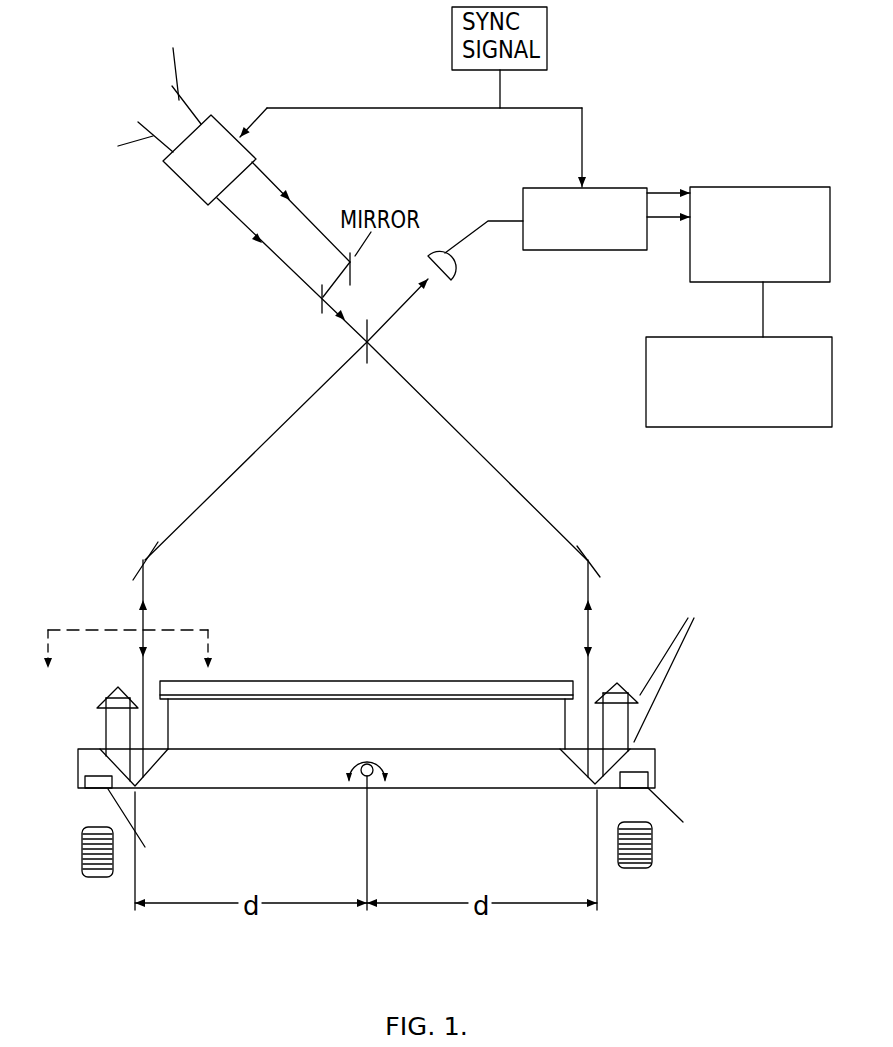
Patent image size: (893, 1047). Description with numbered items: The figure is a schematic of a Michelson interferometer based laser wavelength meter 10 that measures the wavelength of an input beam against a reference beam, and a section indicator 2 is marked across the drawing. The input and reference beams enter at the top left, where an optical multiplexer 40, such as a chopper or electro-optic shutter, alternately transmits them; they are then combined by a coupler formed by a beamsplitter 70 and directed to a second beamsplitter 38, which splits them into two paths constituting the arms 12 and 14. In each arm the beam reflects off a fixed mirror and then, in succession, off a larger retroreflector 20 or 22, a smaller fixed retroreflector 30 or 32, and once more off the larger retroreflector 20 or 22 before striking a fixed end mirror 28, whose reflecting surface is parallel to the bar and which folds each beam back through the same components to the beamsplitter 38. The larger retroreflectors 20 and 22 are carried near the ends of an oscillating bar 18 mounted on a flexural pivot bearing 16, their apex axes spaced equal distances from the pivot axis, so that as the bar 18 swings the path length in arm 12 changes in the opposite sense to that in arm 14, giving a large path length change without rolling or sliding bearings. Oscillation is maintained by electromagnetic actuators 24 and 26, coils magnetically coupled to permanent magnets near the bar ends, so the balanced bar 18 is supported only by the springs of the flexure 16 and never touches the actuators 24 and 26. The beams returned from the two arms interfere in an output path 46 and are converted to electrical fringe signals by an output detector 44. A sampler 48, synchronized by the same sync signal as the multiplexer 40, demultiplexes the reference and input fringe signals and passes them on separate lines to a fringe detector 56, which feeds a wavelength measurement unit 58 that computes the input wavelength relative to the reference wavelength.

The laser wavelength meter 10 is at (379, 566).
The arm 12 is at (485, 455).
The arm 14 is at (282, 426).
The flexural pivot bearing 16 is at (373, 776).
The oscillating bar 18 is at (205, 751).
The retroreflector 20 is at (656, 762).
The retroreflector 22 is at (100, 766).
The electromagnetic actuator 24 is at (635, 869).
The electromagnetic actuator 26 is at (100, 878).
The fixed end mirror 28 is at (240, 681).
The fixed retroreflector 30 is at (620, 681).
The fixed retroreflector 32 is at (104, 701).
The beamsplitter 38 is at (365, 356).
The optical multiplexer 40 is at (214, 114).
The output detector 44 is at (443, 250).
The output path 46 is at (405, 308).
The sampler 48 is at (606, 219).
The fringe detector 56 is at (760, 262).
The wavelength measurement unit 58 is at (739, 384).
The beamsplitter 70 is at (318, 300).
The section line 2- 2 is at (128, 637).